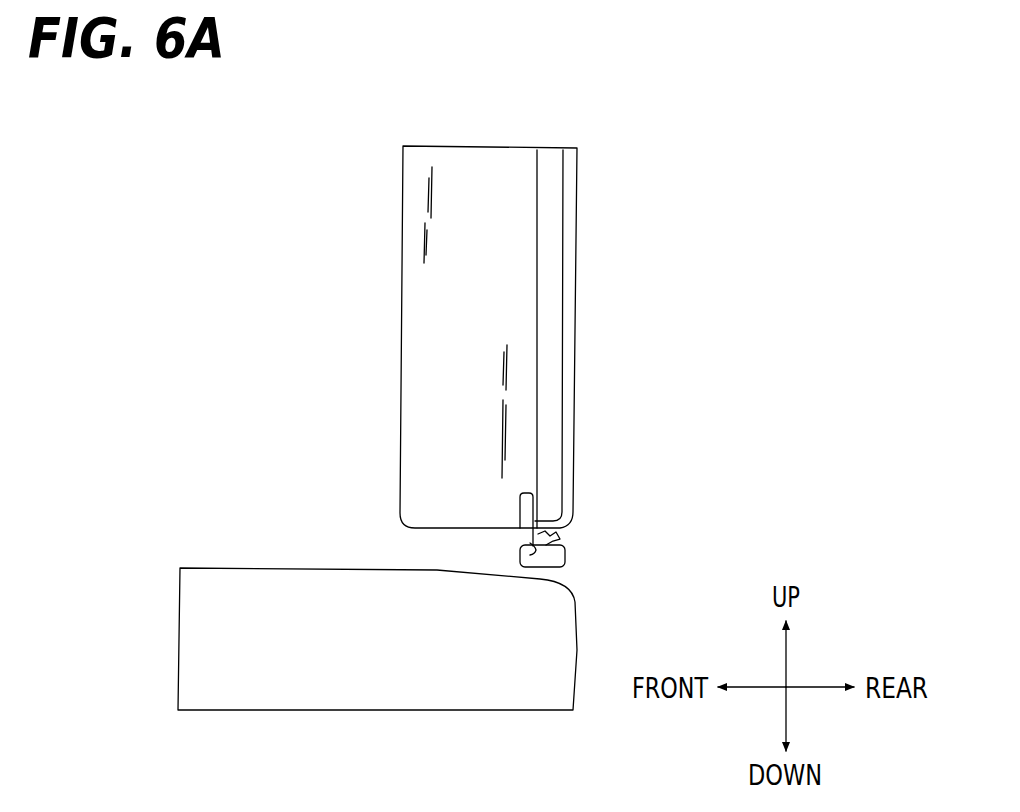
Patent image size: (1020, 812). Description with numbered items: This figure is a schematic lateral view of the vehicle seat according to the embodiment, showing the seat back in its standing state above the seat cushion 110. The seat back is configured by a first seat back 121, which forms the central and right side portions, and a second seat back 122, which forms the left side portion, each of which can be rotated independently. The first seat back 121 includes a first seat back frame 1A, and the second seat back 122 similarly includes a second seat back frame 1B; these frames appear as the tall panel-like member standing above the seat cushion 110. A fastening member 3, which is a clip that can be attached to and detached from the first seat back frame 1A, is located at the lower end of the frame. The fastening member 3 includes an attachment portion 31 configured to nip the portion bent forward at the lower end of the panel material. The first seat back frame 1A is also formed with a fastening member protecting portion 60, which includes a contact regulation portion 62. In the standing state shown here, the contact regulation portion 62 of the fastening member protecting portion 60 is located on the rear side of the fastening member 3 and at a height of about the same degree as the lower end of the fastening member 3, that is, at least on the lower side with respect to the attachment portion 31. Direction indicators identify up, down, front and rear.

The first seat back 121 is at (402, 144).
The second seat back 122 is at (511, 305).
The first seat back frame 1A is at (552, 315).
The second seat back frame 1B is at (547, 337).
The fastening member protecting portion 60 is at (515, 511).
The attachment portion 31 is at (545, 520).
The contact regulation portion 62 is at (565, 554).
The fastening member 3 is at (517, 548).
The seat cushion 110 is at (250, 564).